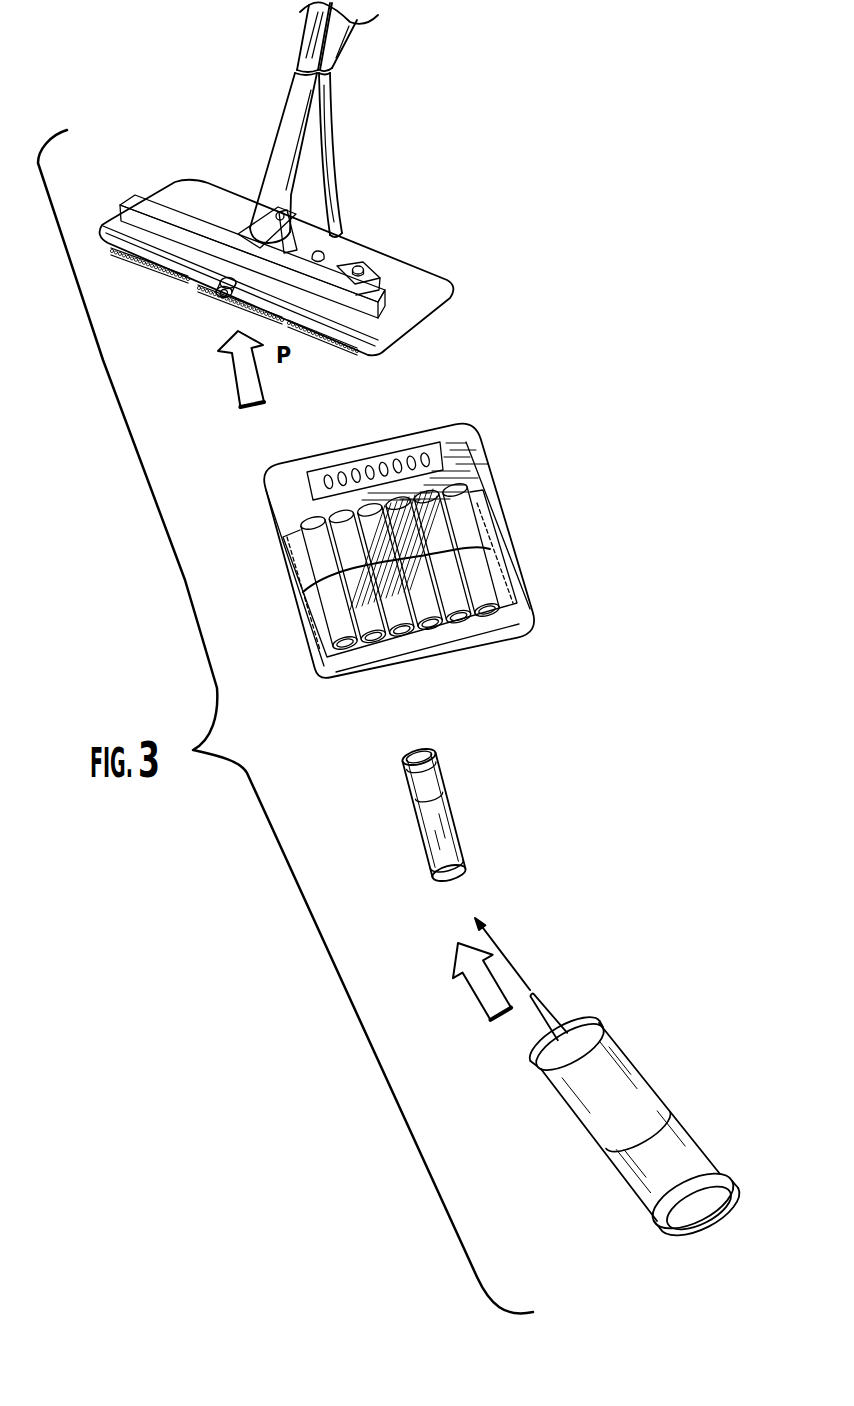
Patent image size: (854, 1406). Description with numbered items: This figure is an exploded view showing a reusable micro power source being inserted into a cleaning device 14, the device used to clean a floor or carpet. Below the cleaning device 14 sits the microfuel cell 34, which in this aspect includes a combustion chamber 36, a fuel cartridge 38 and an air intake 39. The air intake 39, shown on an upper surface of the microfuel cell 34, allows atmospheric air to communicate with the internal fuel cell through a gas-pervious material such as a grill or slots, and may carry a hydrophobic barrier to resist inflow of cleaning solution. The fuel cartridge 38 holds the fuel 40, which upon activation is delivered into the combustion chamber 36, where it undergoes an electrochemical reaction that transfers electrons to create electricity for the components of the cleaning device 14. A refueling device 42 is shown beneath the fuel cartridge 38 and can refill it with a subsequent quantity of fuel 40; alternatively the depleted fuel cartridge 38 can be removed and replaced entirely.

The cleaning device 14 is at (401, 216).
The microfuel cell 34 is at (399, 551).
The combustion chamber 36 is at (363, 645).
The fuel cartridge 38 is at (443, 815).
The air intake 39 is at (435, 457).
The fuel 40 is at (417, 793).
The refueling device 42 is at (682, 1122).